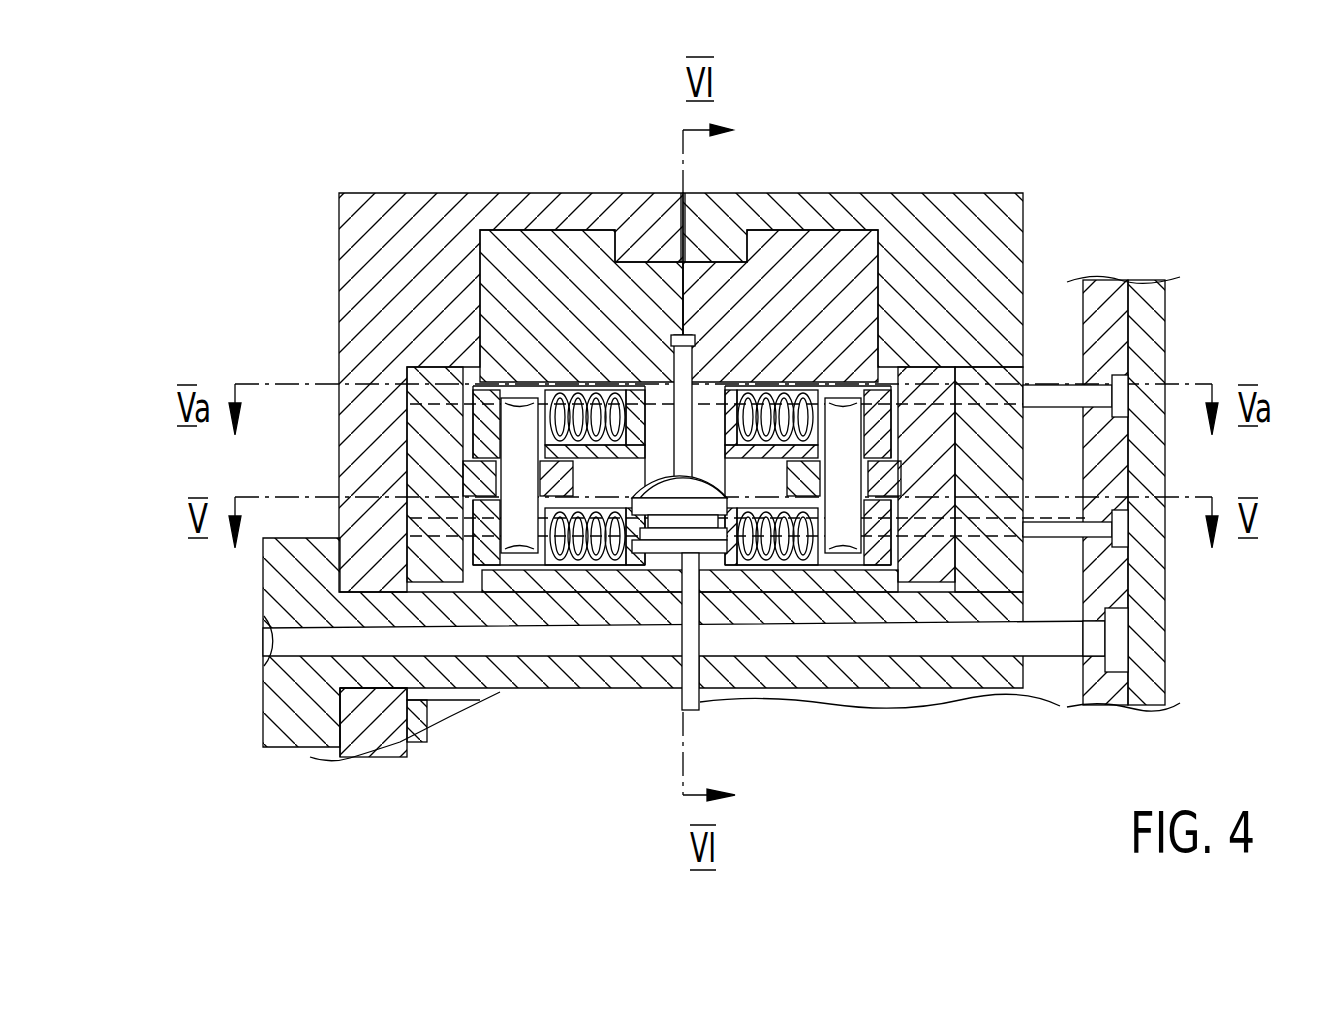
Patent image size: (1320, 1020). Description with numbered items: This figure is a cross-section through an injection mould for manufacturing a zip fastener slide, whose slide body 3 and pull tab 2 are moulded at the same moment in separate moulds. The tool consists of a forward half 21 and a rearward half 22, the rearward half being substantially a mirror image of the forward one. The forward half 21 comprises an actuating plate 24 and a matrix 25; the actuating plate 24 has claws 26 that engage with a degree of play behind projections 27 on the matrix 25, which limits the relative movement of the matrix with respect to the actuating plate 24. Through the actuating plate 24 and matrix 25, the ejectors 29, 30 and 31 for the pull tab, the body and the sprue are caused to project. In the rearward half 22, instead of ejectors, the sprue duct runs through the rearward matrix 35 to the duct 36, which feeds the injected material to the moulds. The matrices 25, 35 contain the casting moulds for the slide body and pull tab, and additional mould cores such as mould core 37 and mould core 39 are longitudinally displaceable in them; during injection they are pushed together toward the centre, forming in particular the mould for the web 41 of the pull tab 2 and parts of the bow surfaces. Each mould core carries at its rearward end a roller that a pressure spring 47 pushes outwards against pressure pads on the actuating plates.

The pull tab 2 is at (668, 335).
The slide body 3 is at (615, 395).
The forward half of the tool 21 is at (1042, 171).
The rearward half of the tool 22 is at (346, 171).
The actuating plate 24 is at (997, 252).
The matrix 25 is at (1000, 250).
The claws 26 is at (655, 215).
The projections 27 is at (586, 240).
The ejector 29 is at (1055, 393).
The ejector 30 is at (1067, 530).
The ejector 31 is at (1063, 642).
The matrix 35 is at (432, 642).
The duct 36 is at (708, 695).
The mould core 37 is at (735, 485).
The mould core 39 is at (485, 490).
The web 41 is at (655, 548).
The pressure spring 47 is at (600, 560).